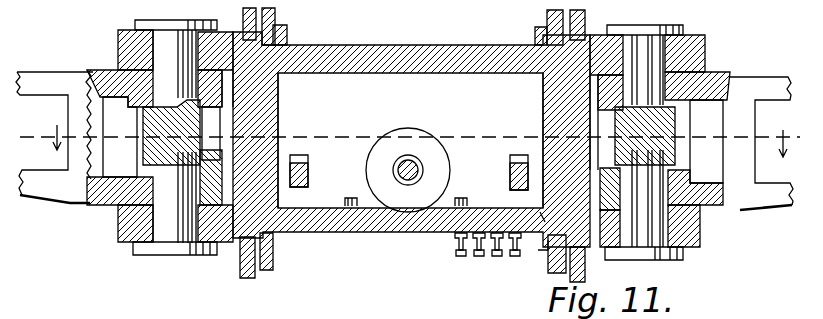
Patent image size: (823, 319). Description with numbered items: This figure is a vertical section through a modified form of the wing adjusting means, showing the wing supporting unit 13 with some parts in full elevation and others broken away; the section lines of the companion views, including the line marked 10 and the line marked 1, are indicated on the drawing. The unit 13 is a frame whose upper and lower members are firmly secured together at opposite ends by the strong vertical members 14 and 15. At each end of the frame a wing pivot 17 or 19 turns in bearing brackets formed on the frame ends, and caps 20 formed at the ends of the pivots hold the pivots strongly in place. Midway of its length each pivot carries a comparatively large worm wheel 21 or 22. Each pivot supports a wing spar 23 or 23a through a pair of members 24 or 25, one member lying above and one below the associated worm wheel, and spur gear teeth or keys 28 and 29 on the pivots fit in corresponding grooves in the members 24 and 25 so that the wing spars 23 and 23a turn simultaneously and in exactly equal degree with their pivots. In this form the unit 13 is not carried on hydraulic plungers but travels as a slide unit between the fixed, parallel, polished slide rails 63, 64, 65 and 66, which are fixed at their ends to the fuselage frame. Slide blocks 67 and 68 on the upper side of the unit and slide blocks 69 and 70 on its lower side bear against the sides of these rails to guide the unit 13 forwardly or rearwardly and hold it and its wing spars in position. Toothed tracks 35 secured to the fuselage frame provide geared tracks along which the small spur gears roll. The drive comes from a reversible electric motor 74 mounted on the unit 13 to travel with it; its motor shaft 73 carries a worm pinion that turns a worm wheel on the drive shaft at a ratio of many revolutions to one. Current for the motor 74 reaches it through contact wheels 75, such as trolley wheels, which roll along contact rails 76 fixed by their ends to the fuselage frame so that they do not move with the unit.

The flange ring 1 is at (243, 14).
The piston member 10 is at (411, 134).
The wing supporting unit 13 is at (404, 74).
The vertical member 14 is at (280, 123).
The vertical member 15 is at (545, 105).
The wing pivot 17 is at (163, 42).
The wing pivot 19 is at (640, 45).
The cap 20 is at (150, 20).
The worm wheel 21 is at (137, 143).
The worm wheel 22 is at (722, 125).
The wing spar 23 is at (53, 70).
The wing spar 23a is at (768, 205).
The member 24 is at (118, 80).
The member 25 is at (670, 87).
The spur gear teeth or keys 28 is at (155, 218).
The spur gear teeth or keys 29 is at (650, 215).
The toothed track 35 is at (300, 157).
The slide rail 63 is at (275, 14).
The slide rail 64 is at (548, 15).
The slide rail 65 is at (275, 268).
The slide rail 66 is at (553, 222).
The slide block 67 is at (287, 40).
The slide block 68 is at (535, 33).
The slide block 69 is at (285, 245).
The slide block 70 is at (545, 252).
The motor shaft 73 is at (394, 184).
The reversible motor 74 is at (432, 137).
The contact brush or contact wheel 75 is at (457, 250).
The contact rail 76 is at (495, 257).